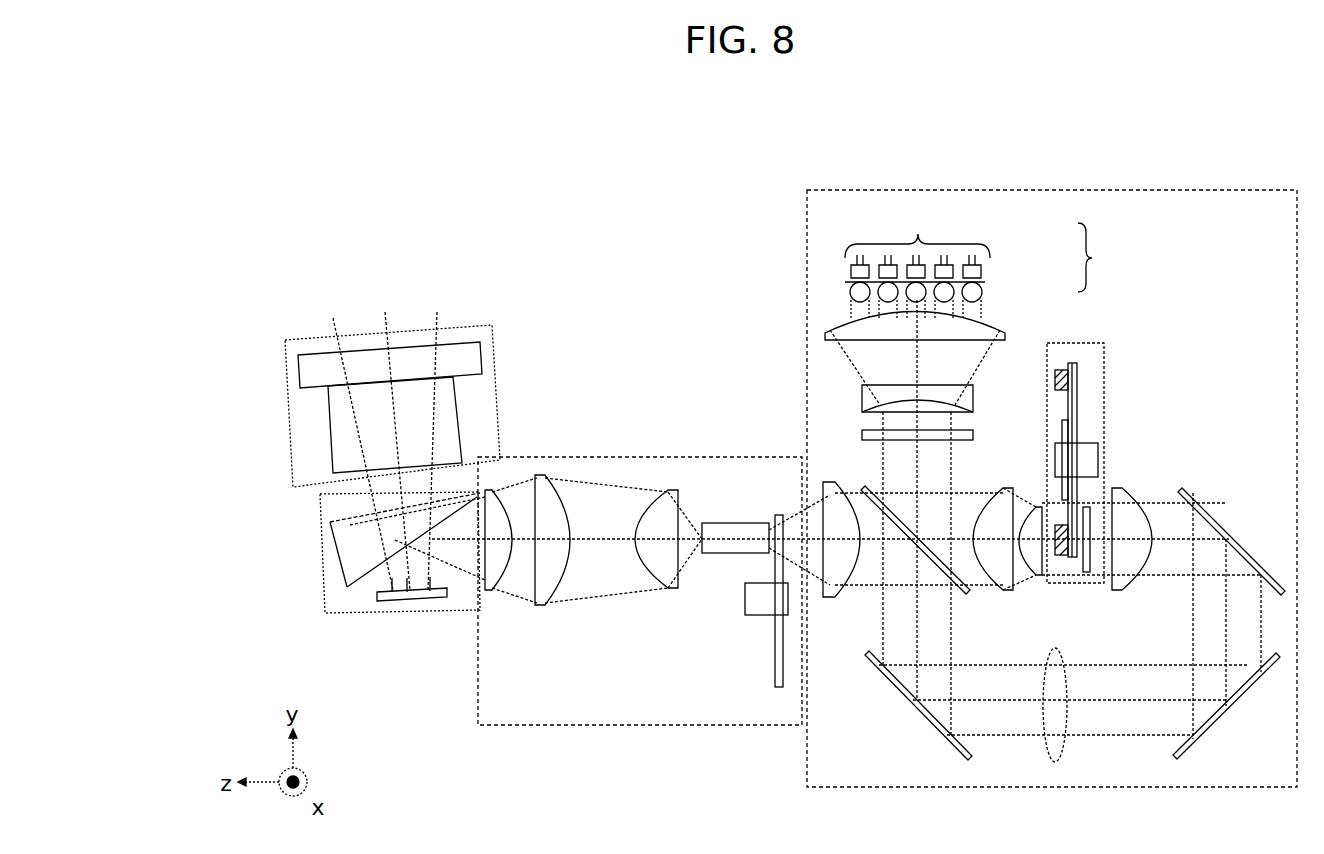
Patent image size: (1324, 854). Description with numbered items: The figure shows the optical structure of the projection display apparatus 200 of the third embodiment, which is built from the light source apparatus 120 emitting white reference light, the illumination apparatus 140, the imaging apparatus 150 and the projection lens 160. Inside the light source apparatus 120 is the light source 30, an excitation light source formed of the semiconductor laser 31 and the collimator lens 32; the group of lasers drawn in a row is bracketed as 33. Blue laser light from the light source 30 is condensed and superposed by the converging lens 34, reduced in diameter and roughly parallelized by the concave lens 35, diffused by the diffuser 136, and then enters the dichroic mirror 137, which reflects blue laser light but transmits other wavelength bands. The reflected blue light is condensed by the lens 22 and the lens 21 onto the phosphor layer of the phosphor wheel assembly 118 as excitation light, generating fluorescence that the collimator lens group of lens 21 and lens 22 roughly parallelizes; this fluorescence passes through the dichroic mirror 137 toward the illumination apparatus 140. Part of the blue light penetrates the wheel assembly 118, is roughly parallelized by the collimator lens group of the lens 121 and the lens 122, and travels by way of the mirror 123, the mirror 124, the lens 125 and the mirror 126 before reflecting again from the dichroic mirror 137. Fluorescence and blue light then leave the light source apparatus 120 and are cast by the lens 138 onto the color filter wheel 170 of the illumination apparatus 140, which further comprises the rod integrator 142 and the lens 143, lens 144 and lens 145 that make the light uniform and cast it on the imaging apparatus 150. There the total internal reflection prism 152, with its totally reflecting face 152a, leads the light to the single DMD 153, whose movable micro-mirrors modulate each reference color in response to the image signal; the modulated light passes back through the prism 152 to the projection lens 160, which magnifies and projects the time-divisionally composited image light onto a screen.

The projection display apparatus 200 is at (620, 238).
The projection lens 160 is at (472, 352).
The imaging apparatus 150 is at (322, 513).
The total internal reflection prism 152 is at (335, 537).
The face 152a is at (362, 590).
The DMD 153 is at (416, 600).
The illumination apparatus 140 is at (638, 457).
The lens 145 is at (495, 592).
The lens 144 is at (545, 605).
The lens 143 is at (665, 590).
The rod integrator 142 is at (735, 555).
The color filter wheel 170 is at (762, 616).
The light source apparatus 120 is at (1058, 790).
The lens 138 is at (828, 598).
The dichroic mirror 137 is at (870, 490).
The diffuser 136 is at (862, 435).
The concave lens 35 is at (862, 392).
The converging lens 34 is at (1005, 335).
The light emitting elements 33 is at (918, 233).
The semiconductor laser 31 is at (985, 268).
The collimator lens 32 is at (985, 284).
The light source 30 is at (1100, 257).
The phosphor wheel assembly 118 is at (1104, 390).
The lens 121 is at (1090, 510).
The lens 122 is at (1118, 500).
The mirror 123 is at (1225, 535).
The lens 22 is at (1005, 592).
The lens 21 is at (1038, 575).
The mirror 126 is at (932, 725).
The lens 125 is at (1057, 750).
The mirror 124 is at (1210, 722).